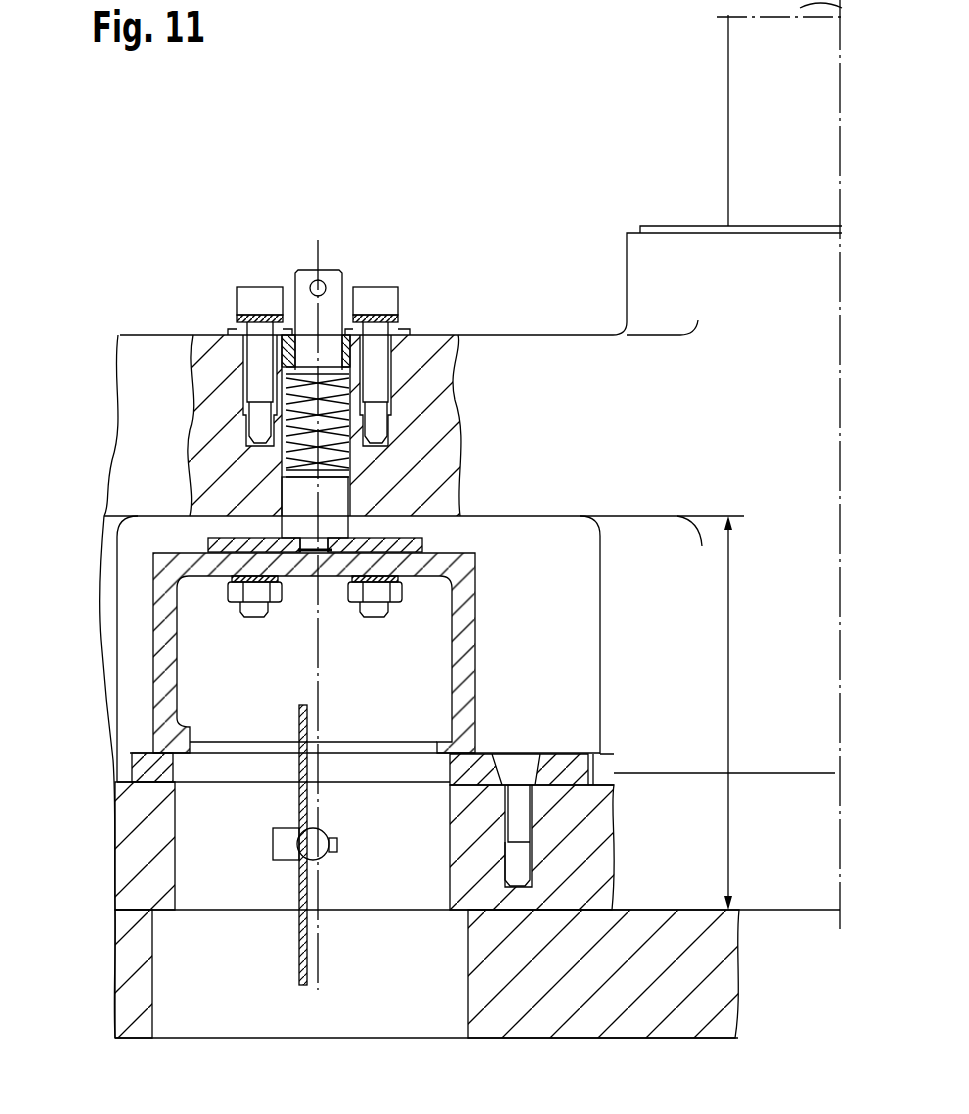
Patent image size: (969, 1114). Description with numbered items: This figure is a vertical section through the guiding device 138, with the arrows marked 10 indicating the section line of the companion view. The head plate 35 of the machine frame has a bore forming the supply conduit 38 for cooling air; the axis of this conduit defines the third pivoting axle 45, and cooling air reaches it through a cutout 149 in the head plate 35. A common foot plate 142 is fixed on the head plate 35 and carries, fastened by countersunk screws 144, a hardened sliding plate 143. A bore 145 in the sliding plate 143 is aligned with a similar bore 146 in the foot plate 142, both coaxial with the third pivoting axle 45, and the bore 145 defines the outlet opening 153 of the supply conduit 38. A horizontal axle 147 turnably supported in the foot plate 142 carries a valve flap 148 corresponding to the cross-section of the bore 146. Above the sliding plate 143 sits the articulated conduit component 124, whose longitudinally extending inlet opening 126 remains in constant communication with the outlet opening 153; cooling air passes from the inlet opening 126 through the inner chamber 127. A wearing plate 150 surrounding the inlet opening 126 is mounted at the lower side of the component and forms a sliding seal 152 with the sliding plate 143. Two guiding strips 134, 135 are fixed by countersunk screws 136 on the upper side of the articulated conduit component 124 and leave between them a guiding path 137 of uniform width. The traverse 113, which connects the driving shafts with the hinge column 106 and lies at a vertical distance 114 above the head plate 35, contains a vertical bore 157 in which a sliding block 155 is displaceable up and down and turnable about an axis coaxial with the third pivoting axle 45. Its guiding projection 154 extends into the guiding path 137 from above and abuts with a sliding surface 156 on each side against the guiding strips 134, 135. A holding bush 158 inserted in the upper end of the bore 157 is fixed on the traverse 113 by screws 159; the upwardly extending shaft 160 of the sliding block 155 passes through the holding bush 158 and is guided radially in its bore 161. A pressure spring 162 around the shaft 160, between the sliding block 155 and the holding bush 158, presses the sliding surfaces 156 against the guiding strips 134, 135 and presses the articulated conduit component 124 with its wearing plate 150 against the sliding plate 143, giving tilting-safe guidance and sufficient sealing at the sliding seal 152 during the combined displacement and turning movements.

The section line X-X 10 is at (85, 573).
The head plate 35 is at (748, 910).
The supply conduit 38 is at (260, 765).
The third pivoting axle 45 is at (318, 253).
The hinge column 106 is at (728, 90).
The traverse 113 is at (460, 397).
The vertical distance 114 is at (728, 585).
The articulated conduit component 124 is at (490, 593).
The inlet opening 126 is at (193, 733).
The inner chamber 127 is at (430, 592).
The guiding strip 134 is at (213, 538).
The guiding strip 135 is at (430, 538).
The countersunk screws 136 is at (182, 588).
The guiding path 137 is at (350, 500).
The guiding device 138 is at (428, 285).
The foot plate 142 is at (613, 832).
The sliding plate 143 is at (573, 754).
The countersunk screws 144 is at (525, 767).
The bore 145 is at (178, 763).
The bore 146 is at (447, 882).
The horizontal axle 147 is at (322, 860).
The valve flap 148 is at (297, 968).
The cutout 149 is at (467, 1013).
The wearing plate 150 is at (475, 753).
The sliding seal 152 is at (153, 748).
The outlet opening 153 is at (345, 770).
The guiding projection 154 is at (305, 546).
The sliding block 155 is at (282, 490).
The sliding surface 156 is at (255, 607).
The vertical bore 157 is at (350, 462).
The holding bush 158 is at (400, 332).
The screws 159 is at (245, 298).
The shaft 160 is at (300, 270).
The bore 161 is at (292, 333).
The spring 162 is at (285, 447).